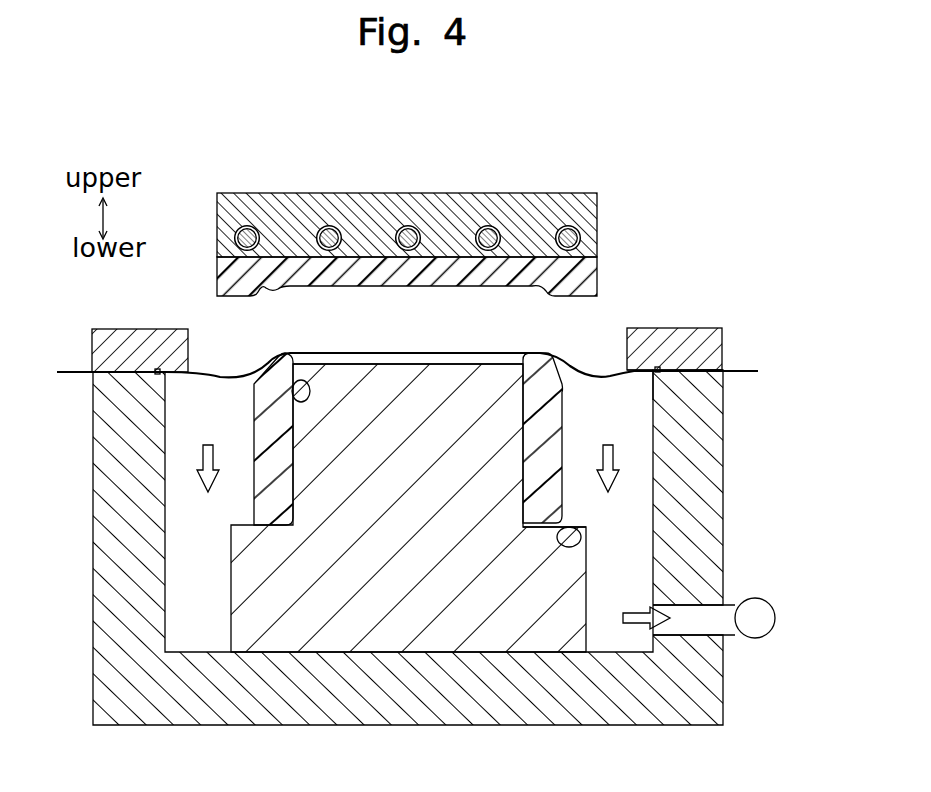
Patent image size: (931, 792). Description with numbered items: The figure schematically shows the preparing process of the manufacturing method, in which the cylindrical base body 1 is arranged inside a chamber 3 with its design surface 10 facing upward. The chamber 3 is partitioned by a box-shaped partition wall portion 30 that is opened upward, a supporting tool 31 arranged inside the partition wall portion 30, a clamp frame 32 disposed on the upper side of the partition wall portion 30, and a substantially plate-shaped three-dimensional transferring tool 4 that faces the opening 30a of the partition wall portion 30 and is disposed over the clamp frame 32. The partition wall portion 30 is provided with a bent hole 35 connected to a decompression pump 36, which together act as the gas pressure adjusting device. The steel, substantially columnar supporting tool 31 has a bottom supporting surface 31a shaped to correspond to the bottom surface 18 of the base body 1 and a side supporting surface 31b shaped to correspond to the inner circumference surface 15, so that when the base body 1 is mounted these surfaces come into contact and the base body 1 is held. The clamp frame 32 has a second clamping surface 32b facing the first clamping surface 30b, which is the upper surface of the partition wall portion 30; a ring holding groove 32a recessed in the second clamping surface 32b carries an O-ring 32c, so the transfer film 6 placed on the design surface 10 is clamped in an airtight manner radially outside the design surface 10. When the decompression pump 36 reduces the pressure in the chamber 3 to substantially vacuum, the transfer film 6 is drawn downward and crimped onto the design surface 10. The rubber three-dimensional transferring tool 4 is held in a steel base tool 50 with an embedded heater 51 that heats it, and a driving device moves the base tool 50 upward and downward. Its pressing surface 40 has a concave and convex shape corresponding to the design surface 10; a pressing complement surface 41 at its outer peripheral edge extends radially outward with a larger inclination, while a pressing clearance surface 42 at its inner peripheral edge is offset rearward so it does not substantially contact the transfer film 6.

The base body 1 is at (262, 495).
The chamber 3 is at (643, 580).
The three-dimensional transferring tool 4 is at (588, 274).
The transfer film 6 is at (210, 380).
The design surface 10 is at (266, 364).
The inner circumference surface 15 is at (292, 391).
The bottom surface 18 is at (568, 546).
The partition wall portion 30 is at (722, 460).
The opening 30a is at (590, 400).
The first clamping surface 30b is at (718, 378).
The supporting tool 31 is at (242, 587).
The bottom supporting surface 31a is at (566, 534).
The side supporting surface 31b is at (330, 410).
The clamp frame 32 is at (134, 334).
The ring holding groove 32a is at (158, 369).
The second clamping surface 32b is at (680, 381).
The O-ring 32c is at (150, 368).
The bent hole 35 is at (692, 615).
The decompression pump 36 is at (756, 600).
The pressing surface 40 is at (280, 284).
The pressing complement surface 41 is at (272, 286).
The pressing clearance surface 42 is at (300, 286).
The base tool 50 is at (590, 212).
The heater 51 is at (330, 236).